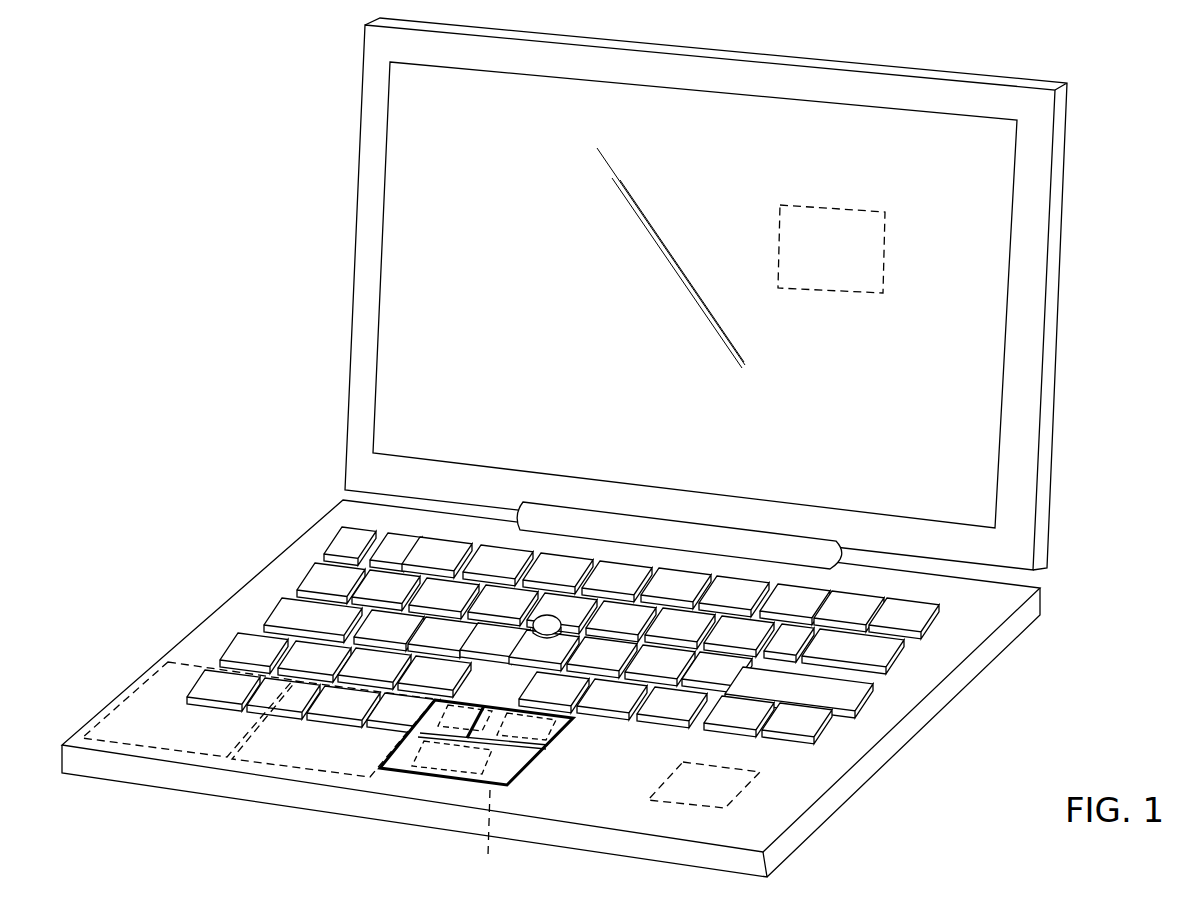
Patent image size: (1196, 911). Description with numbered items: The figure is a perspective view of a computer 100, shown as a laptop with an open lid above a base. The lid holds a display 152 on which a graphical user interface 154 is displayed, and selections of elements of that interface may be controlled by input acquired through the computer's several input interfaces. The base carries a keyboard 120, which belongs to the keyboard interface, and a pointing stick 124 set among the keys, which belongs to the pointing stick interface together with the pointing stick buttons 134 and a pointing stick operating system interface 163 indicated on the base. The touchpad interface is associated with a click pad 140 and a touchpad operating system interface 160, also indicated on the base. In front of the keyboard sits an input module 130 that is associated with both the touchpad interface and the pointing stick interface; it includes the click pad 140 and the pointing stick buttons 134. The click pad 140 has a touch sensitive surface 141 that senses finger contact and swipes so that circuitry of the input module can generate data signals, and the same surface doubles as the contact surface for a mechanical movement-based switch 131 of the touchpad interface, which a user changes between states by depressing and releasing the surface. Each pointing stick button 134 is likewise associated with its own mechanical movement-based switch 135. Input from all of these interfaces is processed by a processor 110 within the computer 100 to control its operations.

The computer 100 is at (137, 193).
The processor 110 is at (745, 792).
The keyboard 120 is at (772, 683).
The pointing stick 124 is at (548, 618).
The input module 130 is at (538, 772).
The mechanical movement-based switch 131 is at (487, 837).
The pointing stick button 134 is at (515, 695).
The mechanical movement-based switch 135 is at (548, 748).
The click pad 140 is at (430, 778).
The touch sensitive surface 141 is at (522, 770).
The display 152 is at (415, 213).
The graphical user interface 154 is at (834, 203).
The touchpad operating system interface 160 is at (125, 698).
The pointing stick operating system interface 163 is at (287, 772).